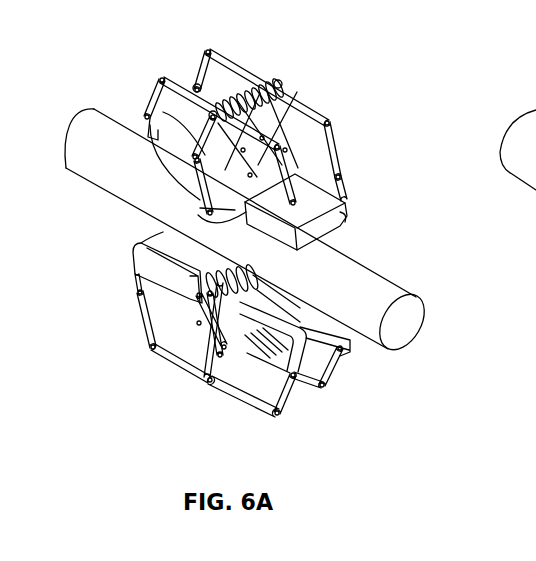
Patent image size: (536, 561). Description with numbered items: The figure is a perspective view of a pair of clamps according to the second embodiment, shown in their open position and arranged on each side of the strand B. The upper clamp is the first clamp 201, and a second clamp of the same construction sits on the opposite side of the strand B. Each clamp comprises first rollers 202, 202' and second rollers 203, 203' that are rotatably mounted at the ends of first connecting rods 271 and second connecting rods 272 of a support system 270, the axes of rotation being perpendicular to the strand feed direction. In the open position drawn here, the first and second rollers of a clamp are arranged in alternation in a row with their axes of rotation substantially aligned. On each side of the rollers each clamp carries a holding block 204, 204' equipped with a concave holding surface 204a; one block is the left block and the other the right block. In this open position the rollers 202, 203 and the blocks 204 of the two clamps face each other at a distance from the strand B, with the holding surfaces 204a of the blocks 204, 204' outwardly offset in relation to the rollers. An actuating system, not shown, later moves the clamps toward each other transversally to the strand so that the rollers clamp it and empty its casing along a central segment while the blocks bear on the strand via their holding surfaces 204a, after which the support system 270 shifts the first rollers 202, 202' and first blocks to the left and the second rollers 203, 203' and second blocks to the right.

The strand B is at (77, 130).
The first clamp 201 is at (275, 73).
The support system 270 is at (238, 62).
The first connecting rods 271 is at (158, 118).
The second connecting rods 272 is at (227, 153).
The second roller 203 is at (315, 146).
The holding block 204 is at (333, 212).
The concave holding surface 204a is at (343, 220).
The first roller 202 is at (154, 225).
The second roller 203' is at (140, 323).
The first roller 202' is at (216, 340).
The holding block 204' is at (351, 369).